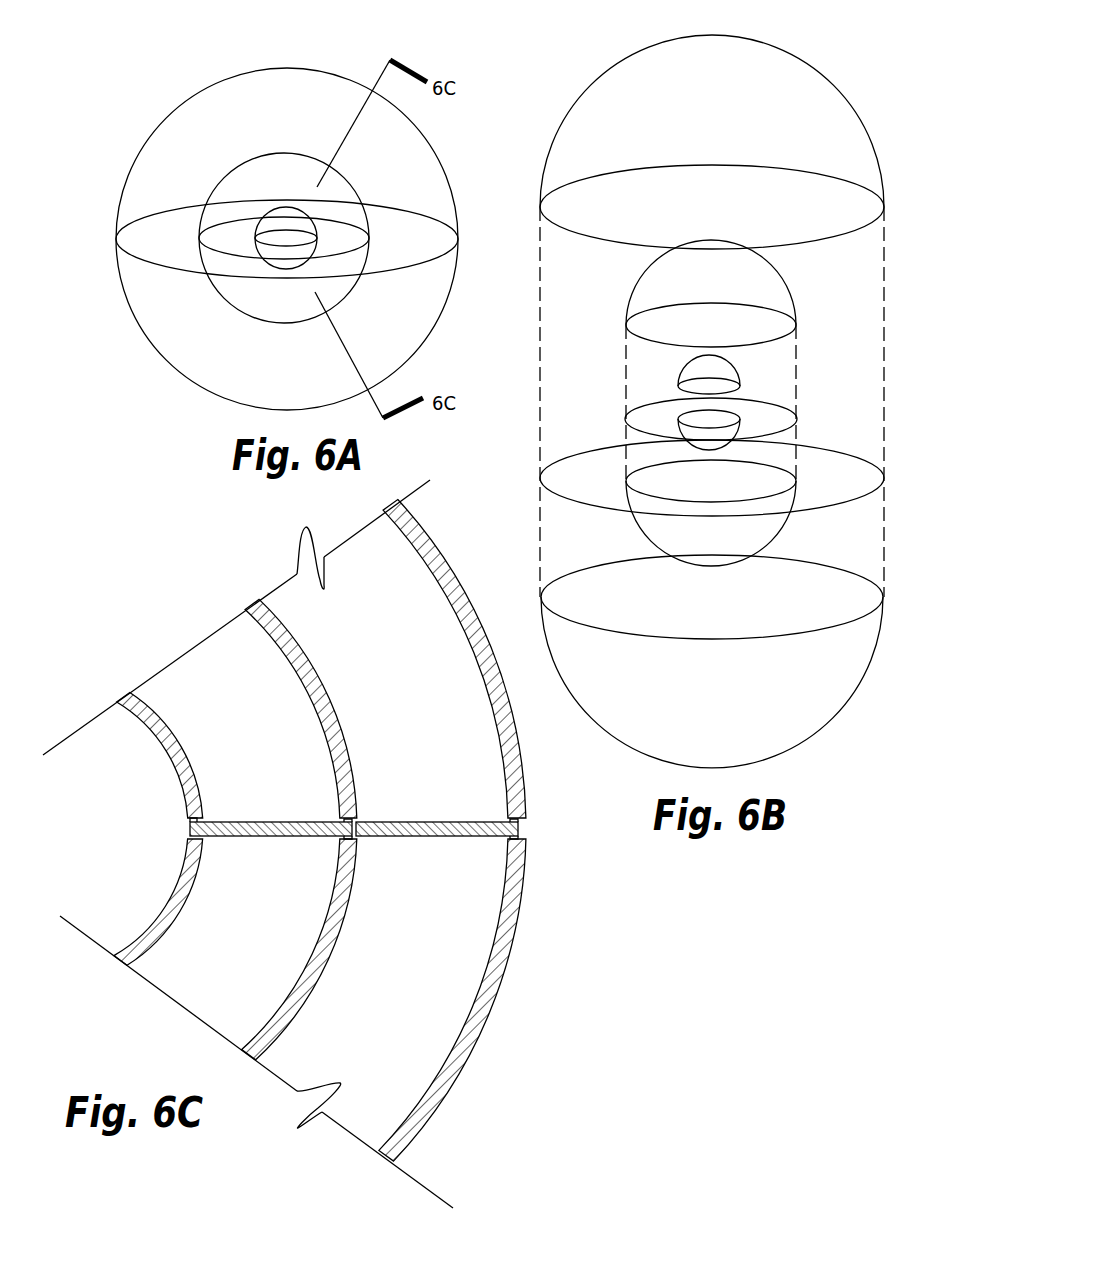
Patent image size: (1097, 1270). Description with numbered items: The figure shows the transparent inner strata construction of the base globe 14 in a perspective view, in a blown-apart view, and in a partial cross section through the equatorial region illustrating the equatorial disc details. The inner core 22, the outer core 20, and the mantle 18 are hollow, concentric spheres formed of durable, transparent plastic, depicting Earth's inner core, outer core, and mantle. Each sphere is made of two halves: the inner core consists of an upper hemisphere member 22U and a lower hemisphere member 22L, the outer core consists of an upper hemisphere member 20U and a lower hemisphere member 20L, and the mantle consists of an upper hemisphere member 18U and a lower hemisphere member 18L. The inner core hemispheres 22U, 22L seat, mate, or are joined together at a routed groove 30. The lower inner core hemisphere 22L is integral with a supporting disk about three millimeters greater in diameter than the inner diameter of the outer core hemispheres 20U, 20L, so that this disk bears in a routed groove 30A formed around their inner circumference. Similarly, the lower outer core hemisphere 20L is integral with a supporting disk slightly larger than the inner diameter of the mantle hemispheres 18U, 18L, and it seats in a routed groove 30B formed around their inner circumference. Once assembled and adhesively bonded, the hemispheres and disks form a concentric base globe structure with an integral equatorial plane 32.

In FIG. 6A, the nested hemispherical shell assembly 14 is at (276, 255).
In FIG. 6A, the mantle 18 is at (183, 379).
In FIG. 6B, the upper mantle hemisphere member 18U is at (777, 127).
In FIG. 6C, the upper mantle hemisphere member 18U is at (508, 737).
In FIG. 6B, the lower mantle hemisphere member 18L is at (770, 673).
In FIG. 6C, the lower mantle hemisphere member 18L is at (512, 906).
In FIG. 6A, the outer core 20 is at (257, 320).
In FIG. 6B, the upper outer core hemisphere member 20U is at (778, 303).
In FIG. 6C, the upper outer core hemisphere member 20U is at (335, 737).
In FIG. 6B, the lower outer core hemisphere member 20L is at (645, 458).
In FIG. 6C, the lower outer core hemisphere member 20L is at (345, 906).
In FIG. 6A, the inner core 22 is at (268, 265).
In FIG. 6B, the upper inner core hemisphere member 22U is at (733, 377).
In FIG. 6C, the upper inner core hemisphere member 22U is at (163, 733).
In FIG. 6B, the lower inner core hemisphere member 22L is at (668, 420).
In FIG. 6C, the lower inner core hemisphere member 22L is at (180, 903).
In FIG. 6C, the routed groove 30 is at (190, 823).
In FIG. 6C, the routed groove 30A is at (340, 822).
In FIG. 6C, the routed groove 30B is at (507, 820).
In FIG. 6A, the equatorial plane 32 is at (181, 234).